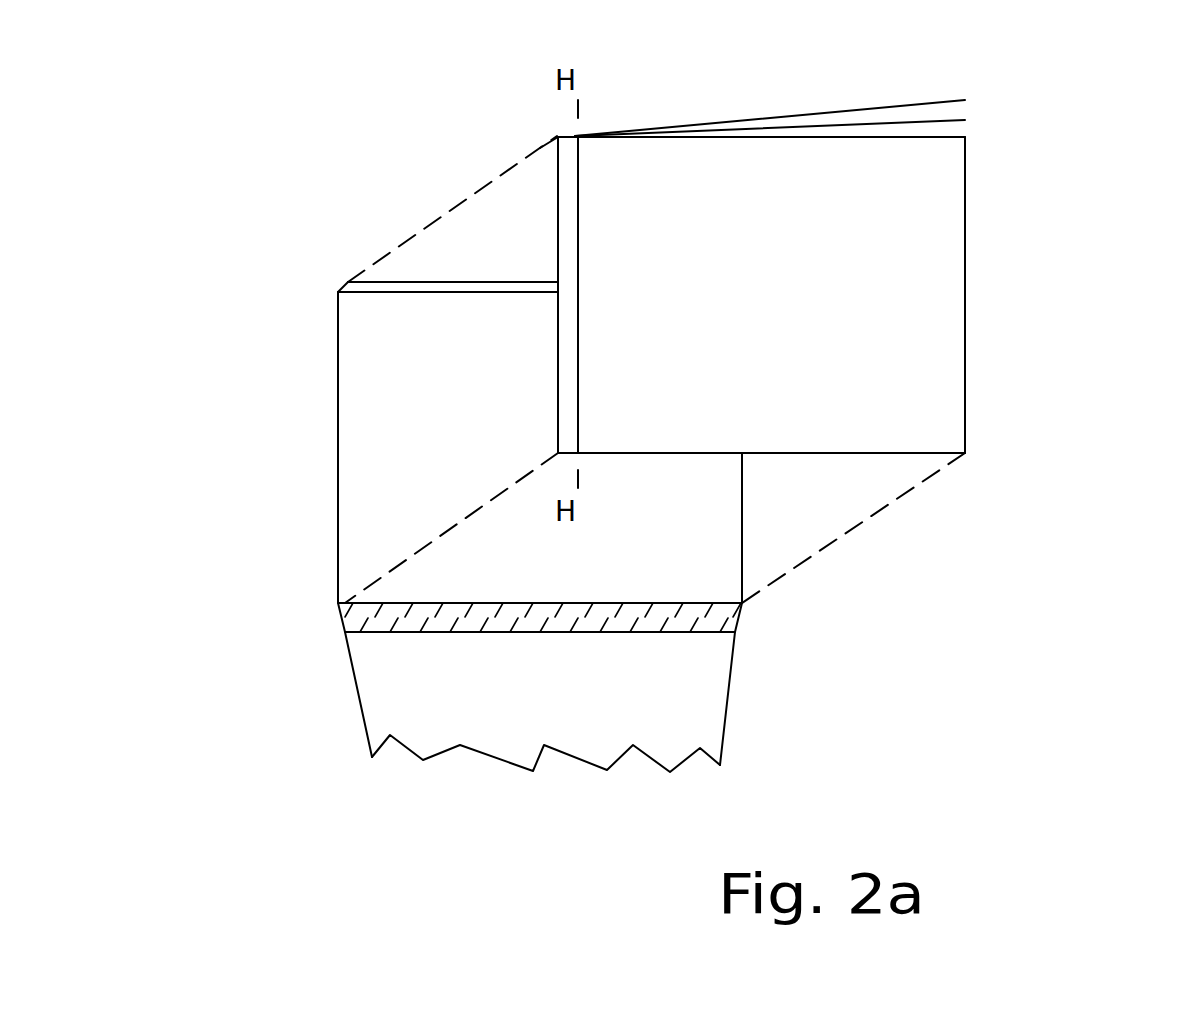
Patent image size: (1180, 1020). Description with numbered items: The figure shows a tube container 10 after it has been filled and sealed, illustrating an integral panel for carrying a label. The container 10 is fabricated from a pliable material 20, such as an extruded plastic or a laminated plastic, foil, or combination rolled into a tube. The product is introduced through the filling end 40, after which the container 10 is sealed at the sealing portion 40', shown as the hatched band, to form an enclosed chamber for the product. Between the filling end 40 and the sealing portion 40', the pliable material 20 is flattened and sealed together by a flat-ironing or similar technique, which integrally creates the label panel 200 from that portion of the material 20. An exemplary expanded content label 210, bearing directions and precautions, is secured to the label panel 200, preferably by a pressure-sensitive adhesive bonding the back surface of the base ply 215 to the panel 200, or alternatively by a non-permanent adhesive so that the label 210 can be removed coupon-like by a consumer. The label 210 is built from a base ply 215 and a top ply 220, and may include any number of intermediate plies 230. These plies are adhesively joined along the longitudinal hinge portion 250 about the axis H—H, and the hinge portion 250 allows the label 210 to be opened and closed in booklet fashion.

The tube container 10 is at (468, 697).
The pliable material 20 is at (378, 665).
The filling end 40 is at (399, 369).
The sealing portion 40' is at (652, 542).
The label panel 200 is at (312, 505).
The expanded content label 210 is at (1037, 377).
The base ply 215 is at (965, 110).
The top ply 220 is at (958, 282).
The intermediate plies 230 is at (955, 133).
The longitudinal hinge portion 250 is at (568, 238).